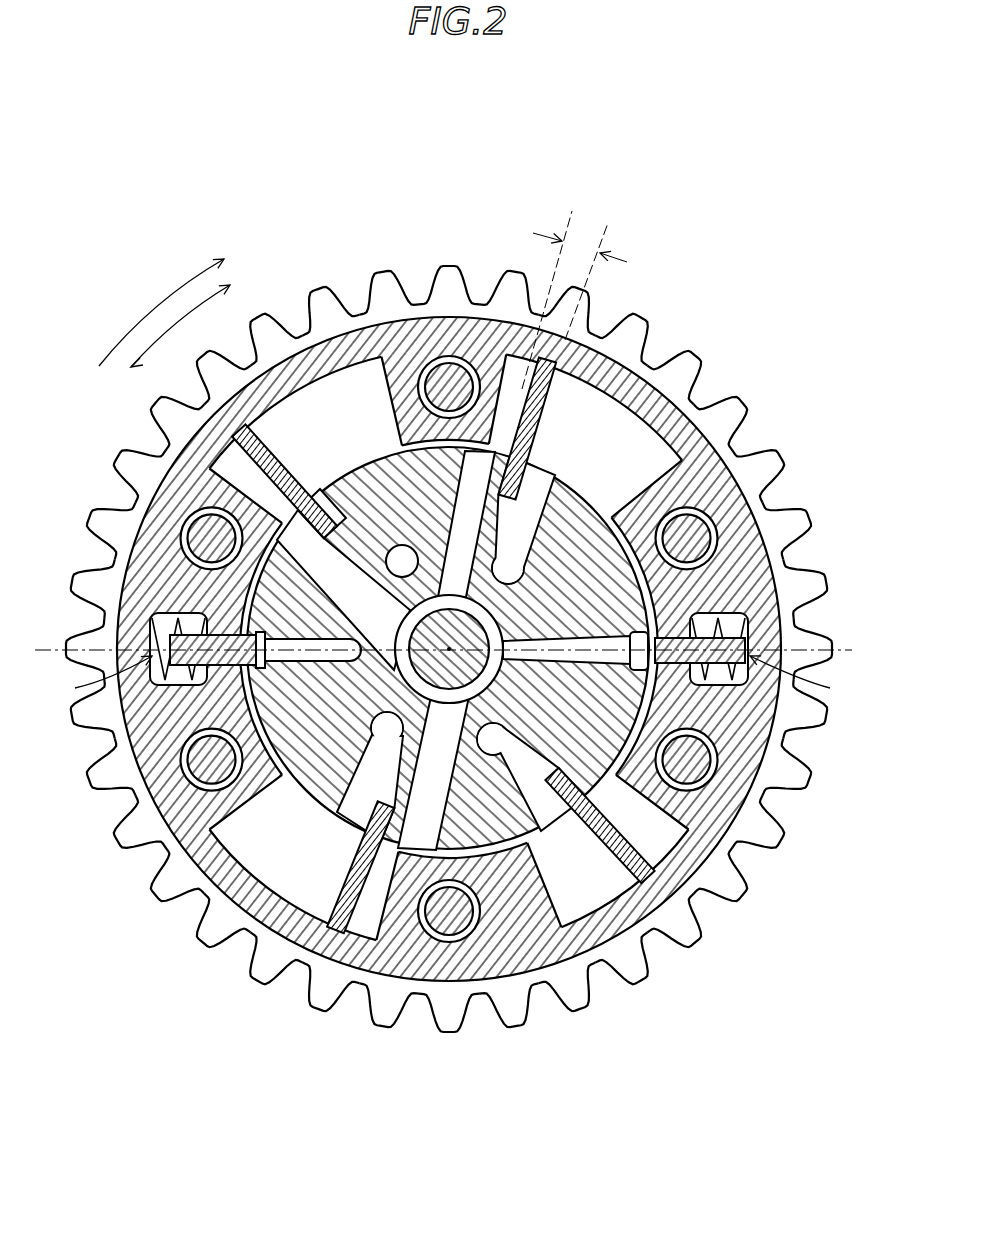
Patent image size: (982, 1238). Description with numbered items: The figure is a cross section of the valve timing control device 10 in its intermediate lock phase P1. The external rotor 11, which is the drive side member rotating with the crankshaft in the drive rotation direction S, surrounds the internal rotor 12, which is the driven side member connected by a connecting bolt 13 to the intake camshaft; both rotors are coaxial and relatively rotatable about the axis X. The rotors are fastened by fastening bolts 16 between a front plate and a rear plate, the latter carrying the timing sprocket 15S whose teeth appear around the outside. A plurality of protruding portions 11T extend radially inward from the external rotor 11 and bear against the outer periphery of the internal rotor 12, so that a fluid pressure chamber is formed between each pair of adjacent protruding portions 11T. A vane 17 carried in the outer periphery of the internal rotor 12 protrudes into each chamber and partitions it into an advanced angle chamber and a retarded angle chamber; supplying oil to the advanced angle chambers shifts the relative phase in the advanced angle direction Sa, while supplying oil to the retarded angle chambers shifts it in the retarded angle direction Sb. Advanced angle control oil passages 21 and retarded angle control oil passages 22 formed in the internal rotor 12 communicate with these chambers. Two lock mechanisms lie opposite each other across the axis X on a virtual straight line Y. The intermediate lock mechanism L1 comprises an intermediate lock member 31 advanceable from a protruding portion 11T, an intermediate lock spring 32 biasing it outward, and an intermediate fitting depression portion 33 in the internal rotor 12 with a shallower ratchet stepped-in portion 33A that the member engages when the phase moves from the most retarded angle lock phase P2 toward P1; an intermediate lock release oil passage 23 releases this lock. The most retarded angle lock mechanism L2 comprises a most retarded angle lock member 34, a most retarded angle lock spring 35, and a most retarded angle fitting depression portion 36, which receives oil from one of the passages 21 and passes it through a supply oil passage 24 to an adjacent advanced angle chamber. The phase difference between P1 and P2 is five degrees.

The valve timing control device 10 is at (724, 286).
The external rotor 11 is at (795, 577).
The protruding portions 11T is at (384, 352).
The internal rotor 12 is at (640, 592).
The connecting bolt 13 is at (447, 596).
The timing sprocket 15S is at (786, 843).
The fastening bolts 16 is at (447, 385).
The vanes 17 is at (278, 470).
The advanced angle control oil passages 21 is at (460, 473).
The retarded angle control oil passages 22 is at (342, 482).
The intermediate lock release oil passage 23 is at (310, 657).
The supply oil passage 24 is at (650, 703).
The intermediate lock member 31 is at (185, 684).
The intermediate lock spring 32 is at (150, 640).
The intermediate fitting depression portion 33 is at (240, 668).
The ratchet stepped-in portion 33A is at (252, 634).
The most retarded angle lock member 34 is at (660, 640).
The most retarded angle lock spring 35 is at (748, 645).
The most retarded angle fitting depression portion 36 is at (632, 665).
The axis X is at (452, 645).
The virtual straight line Y is at (455, 651).
The intermediate lock phase P1 is at (597, 267).
The most retarded angle lock phase P2 is at (553, 285).
The drive rotation direction S is at (161, 312).
The advanced angle direction Sa is at (199, 318).
The retarded angle direction Sb is at (123, 378).
The intermediate lock mechanism L1 is at (100, 676).
The most retarded angle lock mechanism L2 is at (805, 676).